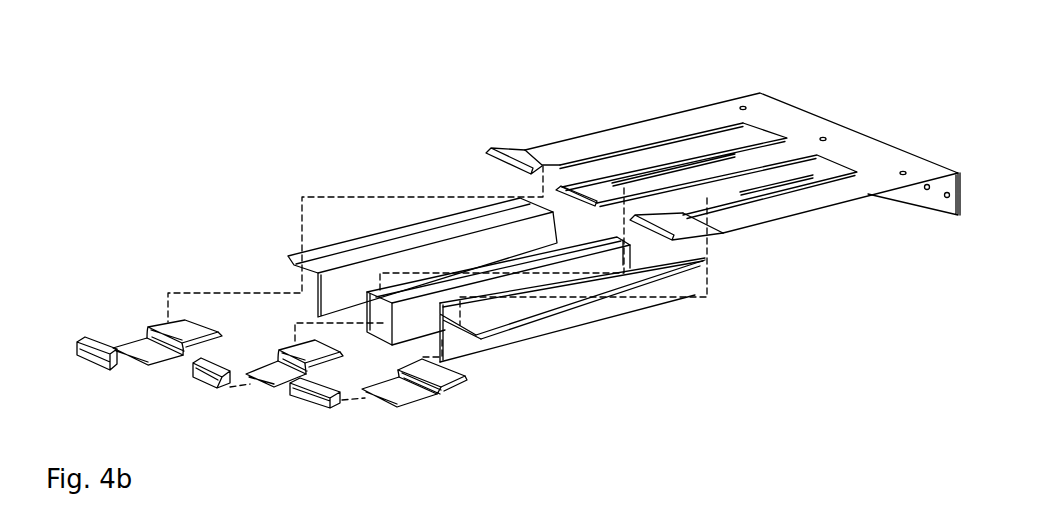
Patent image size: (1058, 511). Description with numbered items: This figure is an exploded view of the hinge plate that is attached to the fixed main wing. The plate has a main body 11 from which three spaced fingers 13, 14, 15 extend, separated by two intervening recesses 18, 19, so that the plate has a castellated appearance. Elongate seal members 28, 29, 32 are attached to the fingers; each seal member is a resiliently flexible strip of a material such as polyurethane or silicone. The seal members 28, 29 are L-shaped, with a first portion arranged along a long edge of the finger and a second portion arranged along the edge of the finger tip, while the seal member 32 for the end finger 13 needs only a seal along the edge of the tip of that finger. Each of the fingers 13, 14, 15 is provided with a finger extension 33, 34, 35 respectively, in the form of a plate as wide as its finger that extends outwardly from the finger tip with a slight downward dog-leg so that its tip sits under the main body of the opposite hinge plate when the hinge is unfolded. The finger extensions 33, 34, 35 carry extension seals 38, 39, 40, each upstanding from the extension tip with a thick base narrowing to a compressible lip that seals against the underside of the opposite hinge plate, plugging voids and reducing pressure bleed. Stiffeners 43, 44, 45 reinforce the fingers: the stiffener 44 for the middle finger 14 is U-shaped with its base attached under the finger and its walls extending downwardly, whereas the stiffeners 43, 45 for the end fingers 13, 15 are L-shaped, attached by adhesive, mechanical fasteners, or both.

The main body 11 is at (867, 145).
The finger 13 is at (652, 123).
The finger 14 is at (768, 143).
The finger 15 is at (870, 188).
The recess 18 is at (770, 153).
The recess 19 is at (835, 153).
The seal member 28 is at (590, 183).
The seal member 29 is at (669, 239).
The seal member 32 is at (486, 158).
The finger extension 33 is at (160, 327).
The finger extension 34 is at (272, 388).
The finger extension 35 is at (445, 393).
The extension seal 38 is at (96, 343).
The extension seal 39 is at (217, 388).
The extension seal 40 is at (332, 408).
The stiffener 43 is at (289, 256).
The stiffener 44 is at (440, 313).
The stiffener 45 is at (593, 317).